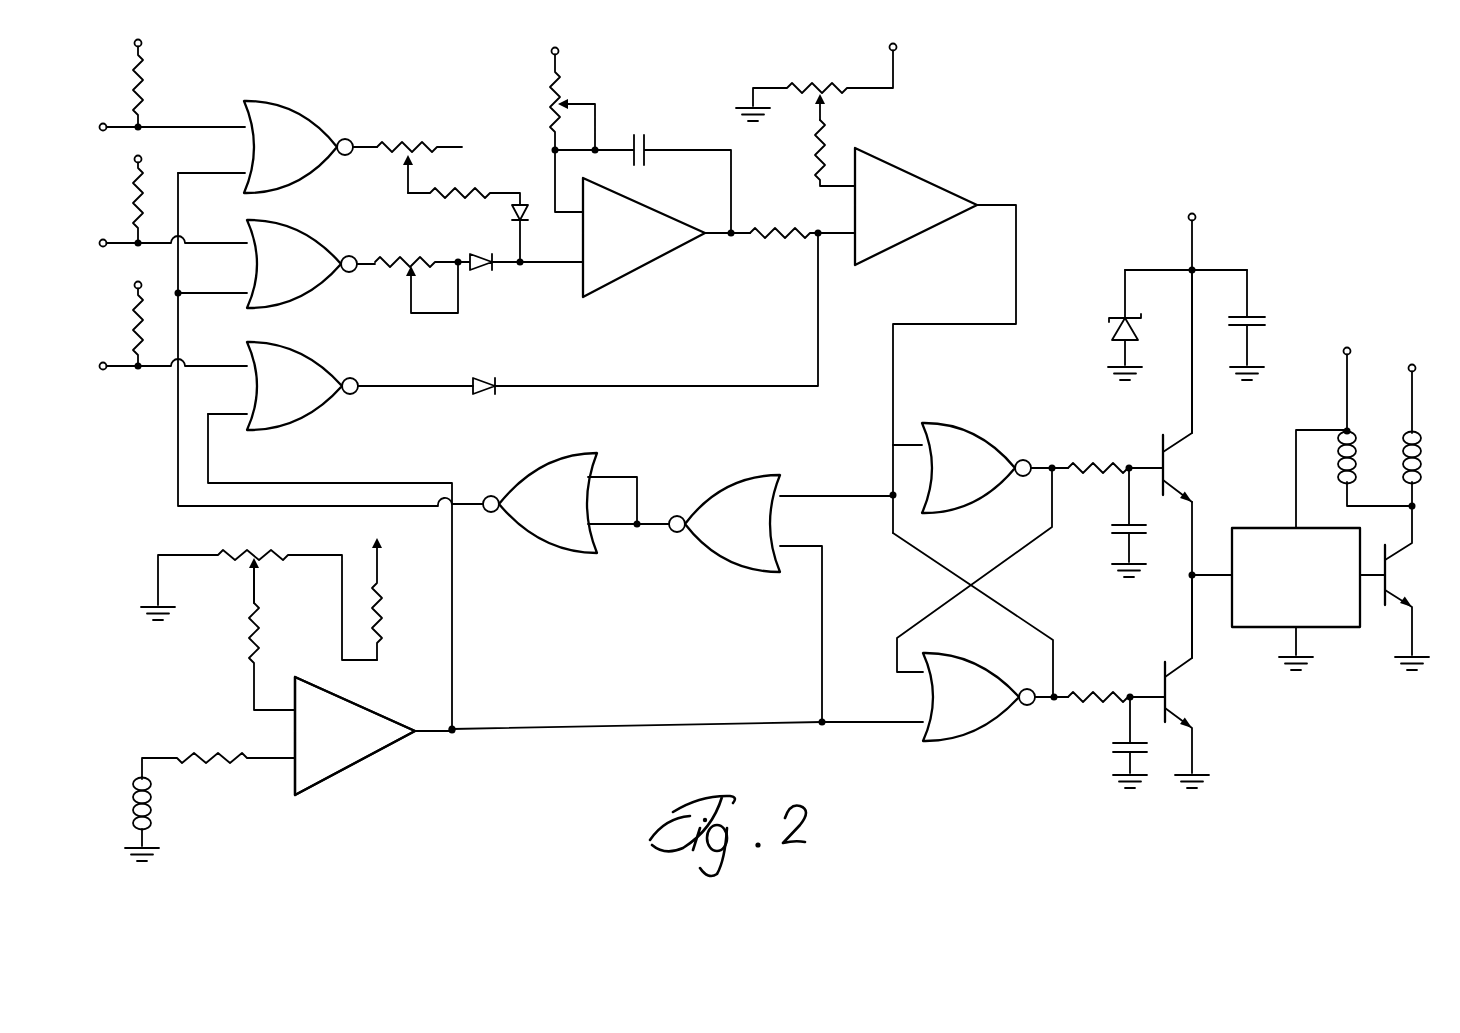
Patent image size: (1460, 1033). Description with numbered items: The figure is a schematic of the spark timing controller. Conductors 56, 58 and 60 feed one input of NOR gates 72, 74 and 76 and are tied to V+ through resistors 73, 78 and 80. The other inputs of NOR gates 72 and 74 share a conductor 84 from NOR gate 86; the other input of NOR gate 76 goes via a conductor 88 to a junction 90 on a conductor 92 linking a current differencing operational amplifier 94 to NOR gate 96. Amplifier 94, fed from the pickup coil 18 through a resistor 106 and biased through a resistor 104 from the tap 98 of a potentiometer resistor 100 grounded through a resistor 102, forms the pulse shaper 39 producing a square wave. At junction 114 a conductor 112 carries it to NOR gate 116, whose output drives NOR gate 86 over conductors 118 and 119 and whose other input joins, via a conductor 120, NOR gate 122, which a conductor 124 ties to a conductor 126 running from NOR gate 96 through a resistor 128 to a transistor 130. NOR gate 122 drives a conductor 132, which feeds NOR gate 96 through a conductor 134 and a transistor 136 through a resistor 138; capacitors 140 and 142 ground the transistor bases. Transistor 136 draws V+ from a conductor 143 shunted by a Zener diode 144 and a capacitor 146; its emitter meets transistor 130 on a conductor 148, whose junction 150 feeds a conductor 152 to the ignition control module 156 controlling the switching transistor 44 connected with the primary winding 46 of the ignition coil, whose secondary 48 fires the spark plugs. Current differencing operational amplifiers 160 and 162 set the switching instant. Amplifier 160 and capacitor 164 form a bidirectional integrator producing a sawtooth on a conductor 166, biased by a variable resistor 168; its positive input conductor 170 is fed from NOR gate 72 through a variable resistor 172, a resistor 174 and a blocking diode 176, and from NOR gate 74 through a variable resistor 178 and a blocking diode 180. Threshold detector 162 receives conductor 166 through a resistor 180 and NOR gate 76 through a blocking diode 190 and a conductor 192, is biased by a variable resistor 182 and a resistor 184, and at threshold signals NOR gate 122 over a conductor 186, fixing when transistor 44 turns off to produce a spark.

The pickup coil 18 is at (150, 800).
The pulse shaper 39 is at (357, 772).
The switching transistor 44 is at (1398, 578).
The primary winding 46 is at (1352, 448).
The secondary 48 is at (1416, 445).
The conductor 56 is at (229, 126).
The conductor 58 is at (229, 243).
The conductor 60 is at (229, 366).
The NOR gate 72 is at (290, 122).
The resistor 73 is at (134, 90).
The NOR gate 74 is at (292, 248).
The NOR gate 76 is at (292, 378).
The resistor 78 is at (134, 200).
The resistor 80 is at (134, 340).
The conductor 84 is at (312, 508).
The NOR gate 86 is at (556, 540).
The conductor 88 is at (455, 646).
The junction 90 is at (456, 736).
The conductor 92 is at (568, 728).
The current differencing operational amplifier 94 is at (376, 736).
The NOR gate 96 is at (958, 728).
The tap 98 is at (260, 568).
The potentiometer resistor 100 is at (250, 552).
The resistor 102 is at (380, 608).
The resistor 104 is at (260, 630).
The resistor 106 is at (236, 766).
The conductor 112 is at (820, 612).
The junction 114 is at (818, 718).
The NOR gate 116 is at (732, 505).
The conductor 118 is at (626, 476).
The conductor 119 is at (653, 536).
The conductor 120 is at (836, 494).
The NOR gate 122 is at (958, 438).
The conductor 124 is at (926, 552).
The conductor 126 is at (1046, 702).
The resistor 128 is at (1088, 694).
The transistor 130 is at (1172, 688).
The conductor 132 is at (1052, 465).
The conductor 134 is at (1012, 564).
The transistor 136 is at (1172, 456).
The resistor 138 is at (1088, 466).
The capacitor 140 is at (1116, 532).
The capacitor 142 is at (1116, 760).
The conductor 143 is at (1194, 413).
The Zener diode 144 is at (1118, 332).
The capacitor 146 is at (1262, 318).
The conductor 148 is at (1196, 520).
The junction 150 is at (1190, 580).
The conductor 152 is at (1212, 580).
The ignition control module 156 is at (1335, 628).
The current differencing operational amplifier 160 is at (645, 252).
The current differencing operational amplifier 162 is at (930, 196).
The capacitor 164 is at (647, 142).
The conductor 166 is at (737, 230).
The variable resistor 168 is at (553, 100).
The conductor 170 is at (565, 266).
The variable resistor 172 is at (403, 140).
The resistor 174 is at (462, 190).
The blocking diode 176 is at (512, 214).
The variable resistor 178 is at (412, 258).
The blocking diode 180 is at (480, 272).
The variable resistor 182 is at (820, 88).
The resistor 184 is at (832, 146).
The conductor 186 is at (1018, 250).
The blocking diode 190 is at (482, 378).
The conductor 192 is at (658, 384).